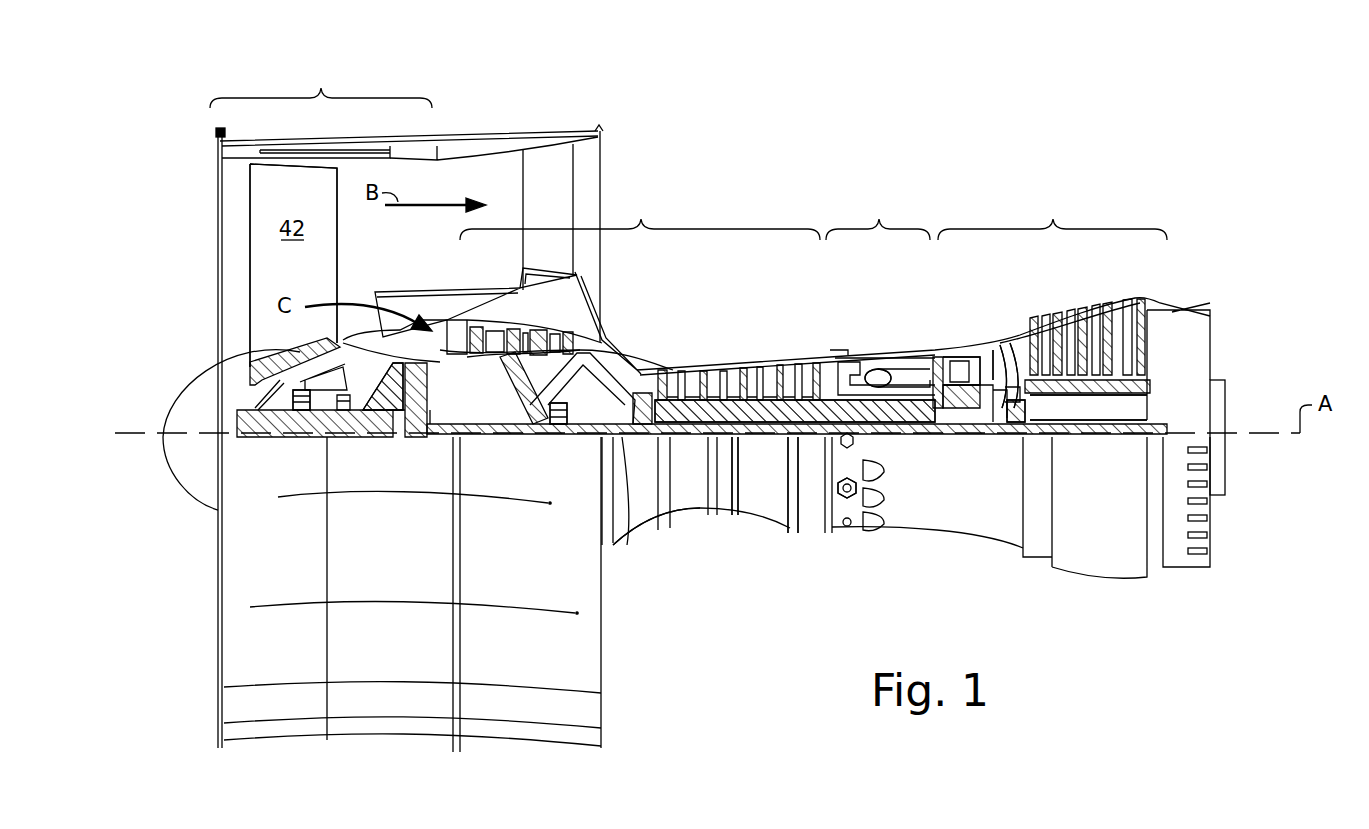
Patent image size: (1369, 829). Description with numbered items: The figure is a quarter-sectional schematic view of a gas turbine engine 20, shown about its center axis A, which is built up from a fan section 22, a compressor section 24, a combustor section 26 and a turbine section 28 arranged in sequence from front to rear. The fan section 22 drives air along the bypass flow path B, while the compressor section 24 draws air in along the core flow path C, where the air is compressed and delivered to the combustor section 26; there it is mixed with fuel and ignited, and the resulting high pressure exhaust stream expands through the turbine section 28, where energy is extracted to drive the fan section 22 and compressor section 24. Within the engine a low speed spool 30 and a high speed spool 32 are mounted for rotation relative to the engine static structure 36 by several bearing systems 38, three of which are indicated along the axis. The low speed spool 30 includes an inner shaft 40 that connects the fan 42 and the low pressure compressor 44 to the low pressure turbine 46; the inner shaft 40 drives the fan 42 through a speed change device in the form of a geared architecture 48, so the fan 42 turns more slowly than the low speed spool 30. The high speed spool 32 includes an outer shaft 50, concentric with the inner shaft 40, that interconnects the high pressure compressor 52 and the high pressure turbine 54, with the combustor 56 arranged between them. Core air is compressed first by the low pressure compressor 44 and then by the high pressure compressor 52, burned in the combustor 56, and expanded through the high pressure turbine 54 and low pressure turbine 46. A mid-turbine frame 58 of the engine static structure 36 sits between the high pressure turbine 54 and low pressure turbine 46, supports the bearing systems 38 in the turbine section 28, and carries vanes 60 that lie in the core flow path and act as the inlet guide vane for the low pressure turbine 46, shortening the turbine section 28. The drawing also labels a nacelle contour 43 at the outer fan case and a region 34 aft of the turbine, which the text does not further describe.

The gas turbine engine 20 is at (1058, 145).
The fan section 22 is at (321, 84).
The compressor section 24 is at (640, 217).
The combustor section 26 is at (878, 217).
The turbine section 28 is at (1052, 216).
The low speed spool 30 is at (763, 452).
The high speed spool 32 is at (790, 400).
The turbine exhaust case 34 is at (1093, 392).
The engine static structure 36 is at (813, 545).
The bearing systems 38 is at (300, 437).
The inner shaft 40 is at (625, 440).
The fan 42 is at (293, 265).
The nacelle 43 is at (493, 137).
The low pressure compressor section 44 is at (535, 335).
The low pressure turbine section 46 is at (1096, 325).
The geared architecture 48 is at (413, 415).
The outer shaft 50 is at (895, 420).
The high pressure compressor section 52 is at (705, 370).
The high pressure turbine section 54 is at (962, 358).
The combustor 56 is at (882, 378).
The mid-turbine frame 58 is at (1004, 335).
The vanes 60 is at (610, 112).